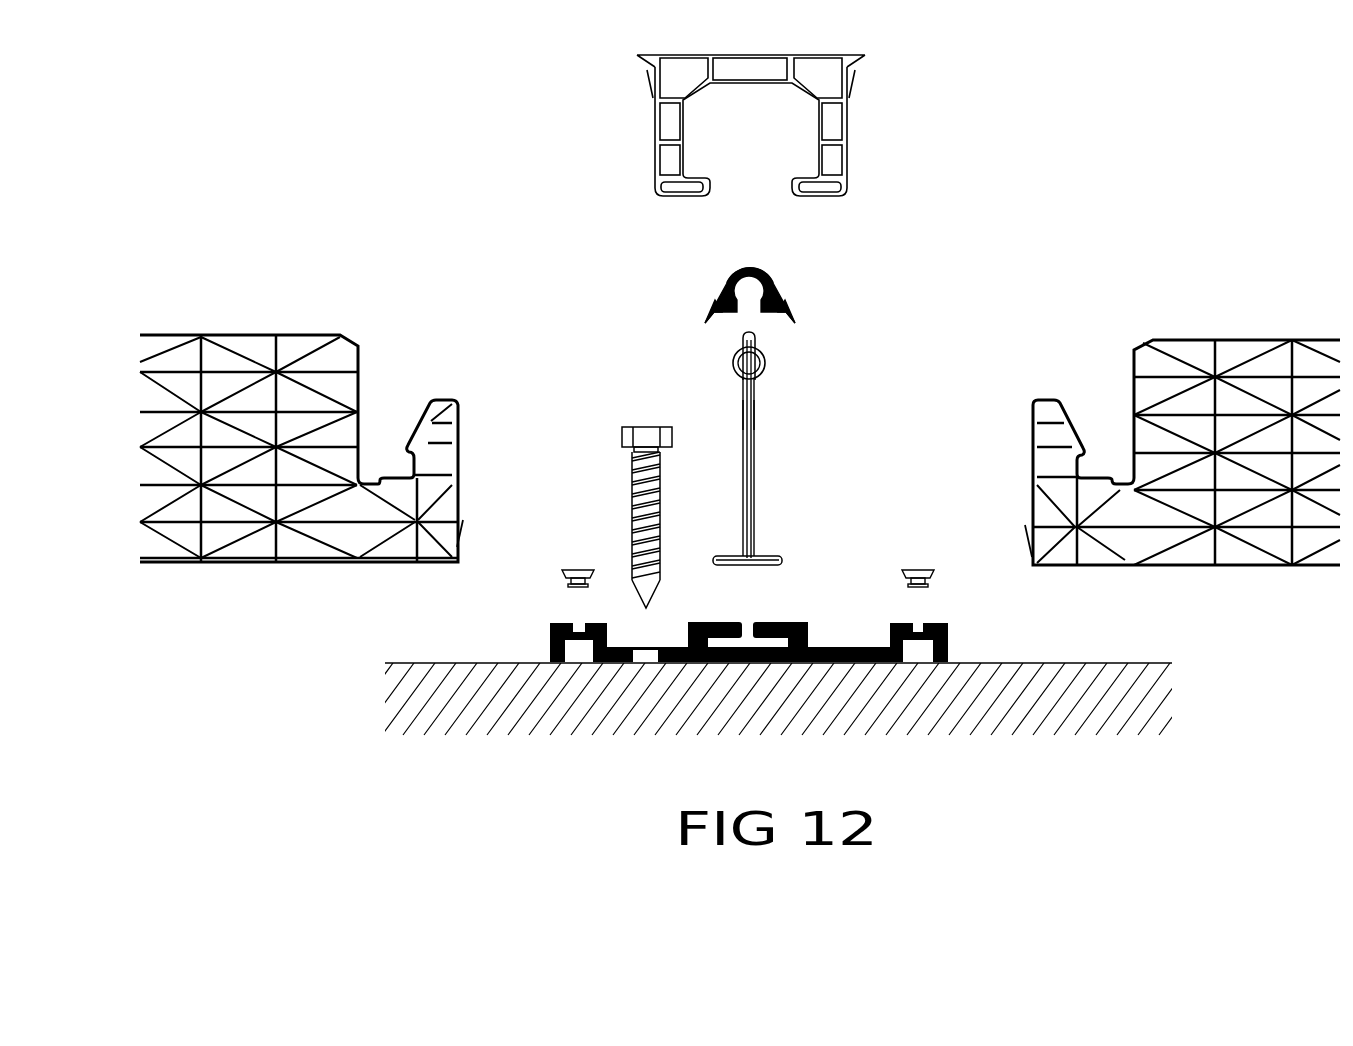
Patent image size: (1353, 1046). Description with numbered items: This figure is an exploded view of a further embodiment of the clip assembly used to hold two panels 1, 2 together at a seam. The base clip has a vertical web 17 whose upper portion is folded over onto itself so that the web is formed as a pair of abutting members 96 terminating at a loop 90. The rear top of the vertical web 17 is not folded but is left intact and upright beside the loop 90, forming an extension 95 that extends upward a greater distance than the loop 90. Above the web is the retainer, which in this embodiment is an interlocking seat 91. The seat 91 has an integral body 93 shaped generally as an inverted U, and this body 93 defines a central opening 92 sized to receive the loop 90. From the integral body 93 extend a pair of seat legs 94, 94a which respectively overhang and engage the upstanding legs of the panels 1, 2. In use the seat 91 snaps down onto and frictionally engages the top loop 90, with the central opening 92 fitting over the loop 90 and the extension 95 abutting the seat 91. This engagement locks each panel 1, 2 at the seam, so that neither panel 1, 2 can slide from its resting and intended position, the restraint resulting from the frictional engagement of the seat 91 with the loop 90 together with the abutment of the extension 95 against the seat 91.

The panel 1 is at (283, 343).
The panel 2 is at (1190, 350).
The vertical web 17 is at (755, 471).
The loop 90 is at (765, 366).
The interlocking seat 91 is at (782, 294).
The central opening 92 is at (740, 280).
The integral body 93 is at (772, 278).
The seat leg 94 is at (707, 317).
The seat leg 94a is at (797, 317).
The extension 95 is at (742, 340).
The abutting members 96 is at (746, 416).